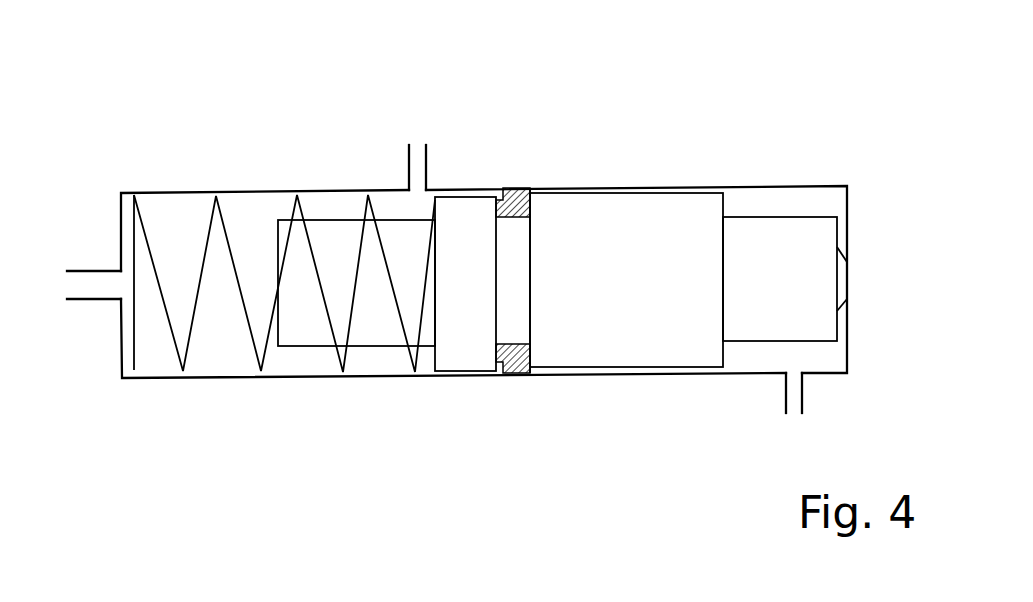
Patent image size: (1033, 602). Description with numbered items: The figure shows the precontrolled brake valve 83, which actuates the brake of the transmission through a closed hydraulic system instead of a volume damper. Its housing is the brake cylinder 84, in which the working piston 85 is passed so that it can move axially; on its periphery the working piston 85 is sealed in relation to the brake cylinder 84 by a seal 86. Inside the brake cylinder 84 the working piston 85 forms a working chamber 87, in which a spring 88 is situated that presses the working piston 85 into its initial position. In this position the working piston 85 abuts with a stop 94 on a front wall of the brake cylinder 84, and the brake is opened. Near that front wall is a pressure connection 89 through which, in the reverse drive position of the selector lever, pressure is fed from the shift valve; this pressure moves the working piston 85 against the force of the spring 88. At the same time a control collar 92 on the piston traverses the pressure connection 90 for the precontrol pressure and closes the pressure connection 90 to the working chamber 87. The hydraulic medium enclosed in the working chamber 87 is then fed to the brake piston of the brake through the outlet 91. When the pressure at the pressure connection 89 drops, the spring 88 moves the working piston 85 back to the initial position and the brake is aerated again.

The precontrolled brake valve 83 is at (476, 155).
The brake cylinder 84 is at (238, 190).
The working piston 85 is at (688, 208).
The seal 86 is at (532, 193).
The working chamber 87 is at (218, 333).
The spring 88 is at (340, 347).
The pressure connection 89 is at (720, 457).
The pressure connection precontrol 90 is at (418, 155).
The outlet 91 is at (85, 287).
The control collar 92 is at (467, 357).
The stop 94 is at (797, 181).